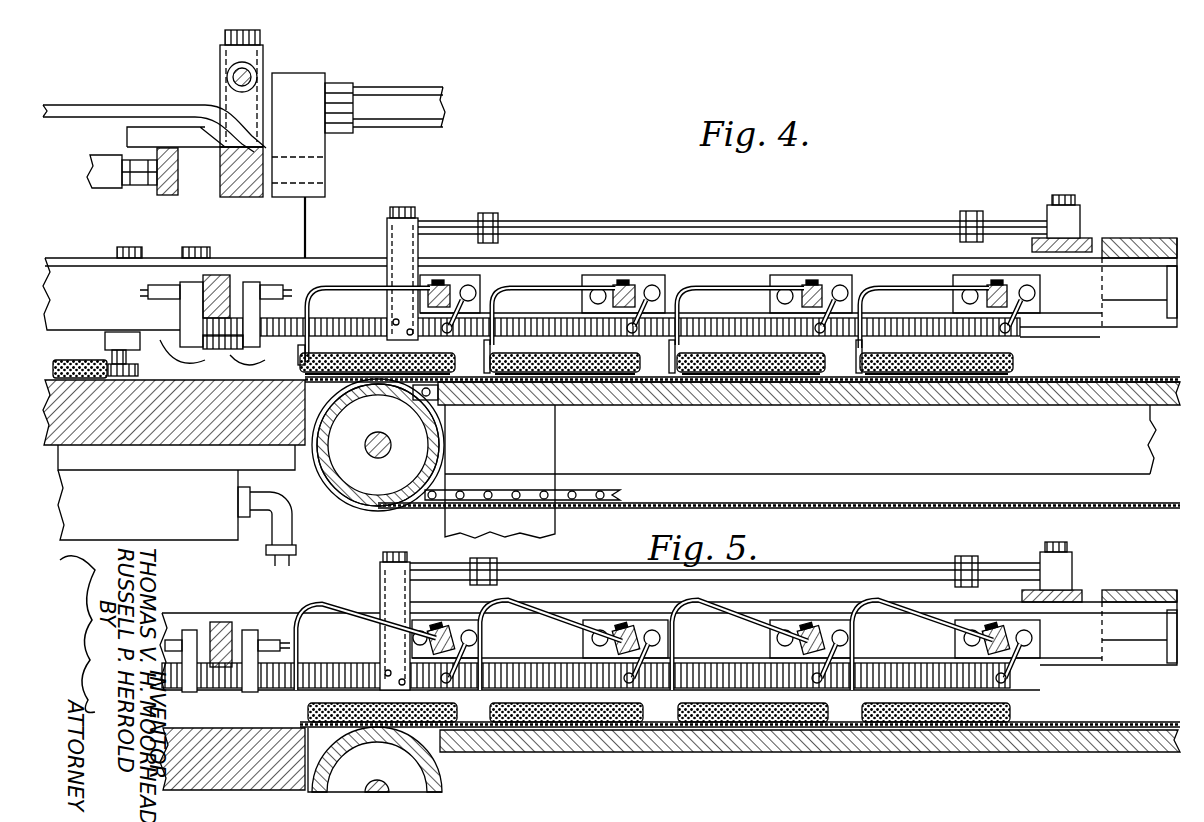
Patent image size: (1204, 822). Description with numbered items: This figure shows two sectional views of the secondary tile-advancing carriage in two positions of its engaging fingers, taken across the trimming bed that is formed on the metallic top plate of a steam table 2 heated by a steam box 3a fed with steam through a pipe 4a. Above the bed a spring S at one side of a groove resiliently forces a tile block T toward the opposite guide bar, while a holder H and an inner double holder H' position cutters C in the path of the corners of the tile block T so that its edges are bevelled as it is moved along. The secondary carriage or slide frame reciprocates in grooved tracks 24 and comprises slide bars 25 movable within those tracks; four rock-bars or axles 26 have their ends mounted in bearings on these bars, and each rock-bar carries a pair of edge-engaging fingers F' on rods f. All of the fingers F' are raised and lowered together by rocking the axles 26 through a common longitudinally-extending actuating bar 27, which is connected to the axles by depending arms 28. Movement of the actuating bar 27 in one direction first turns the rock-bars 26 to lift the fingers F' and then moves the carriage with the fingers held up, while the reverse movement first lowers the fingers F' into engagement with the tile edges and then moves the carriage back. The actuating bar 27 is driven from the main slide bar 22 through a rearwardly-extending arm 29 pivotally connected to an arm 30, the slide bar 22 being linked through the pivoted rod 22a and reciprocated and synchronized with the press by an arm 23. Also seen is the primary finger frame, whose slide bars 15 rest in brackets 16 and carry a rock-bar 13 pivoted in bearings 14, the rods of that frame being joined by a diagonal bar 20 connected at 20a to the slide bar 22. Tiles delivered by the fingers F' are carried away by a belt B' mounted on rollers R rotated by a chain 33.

In FIG. 4, the steam table 2 is at (155, 430).
In FIG. 5, the steam table 2 is at (262, 745).
In FIG. 4, the steam box 3a is at (176, 492).
In FIG. 4, the steam pipe 4a is at (270, 545).
In FIG. 4, the rock-bar 13 is at (96, 175).
In FIG. 4, the bearing 14 is at (137, 172).
In FIG. 4, the slide bar 15 is at (172, 192).
In FIG. 4, the bracket 16 is at (273, 227).
In FIG. 4, the diagonal bar 20 is at (190, 93).
In FIG. 4, the connection of diagonal bar 20a is at (258, 127).
In FIG. 4, the slide bar 22 is at (241, 182).
In FIG. 4, the pivoted rod 22a is at (262, 76).
In FIG. 4, the arm 23 is at (432, 90).
In FIG. 4, the grooved track 24 is at (73, 282).
In FIG. 5, the grooved track 24 is at (1140, 665).
In FIG. 4, the slide bar 25 is at (1120, 300).
In FIG. 5, the slide bar 25 is at (1128, 620).
In FIG. 4, the rock-bar 26 is at (442, 283).
In FIG. 5, the rock-bar 26 is at (818, 626).
In FIG. 4, the actuating bar 27 is at (712, 328).
In FIG. 5, the actuating bar 27 is at (562, 668).
In FIG. 4, the depending arm 28 is at (470, 290).
In FIG. 5, the depending arm 28 is at (843, 630).
In FIG. 4, the rearwardly-extending arm 29 is at (725, 221).
In FIG. 5, the rearwardly-extending arm 29 is at (826, 577).
In FIG. 4, the arm 30 is at (1088, 240).
In FIG. 5, the arm 30 is at (1080, 590).
In FIG. 4, the chain 33 is at (445, 505).
In FIG. 4, the holder H is at (220, 386).
In FIG. 4, the double holder H' is at (139, 317).
In FIG. 4, the spring S is at (160, 345).
In FIG. 4, the cutter C is at (110, 356).
In FIG. 4, the tile block T is at (65, 370).
In FIG. 5, the tile block T is at (452, 706).
In FIG. 4, the edge-engaging finger F' is at (565, 356).
In FIG. 5, the edge-engaging finger F' is at (610, 643).
In FIG. 4, the belt B' is at (742, 441).
In FIG. 5, the belt B' is at (740, 706).
In FIG. 4, the roller R is at (365, 482).
In FIG. 5, the roller R is at (415, 768).
In FIG. 4, the rod f is at (340, 290).
In FIG. 5, the rod f is at (365, 598).